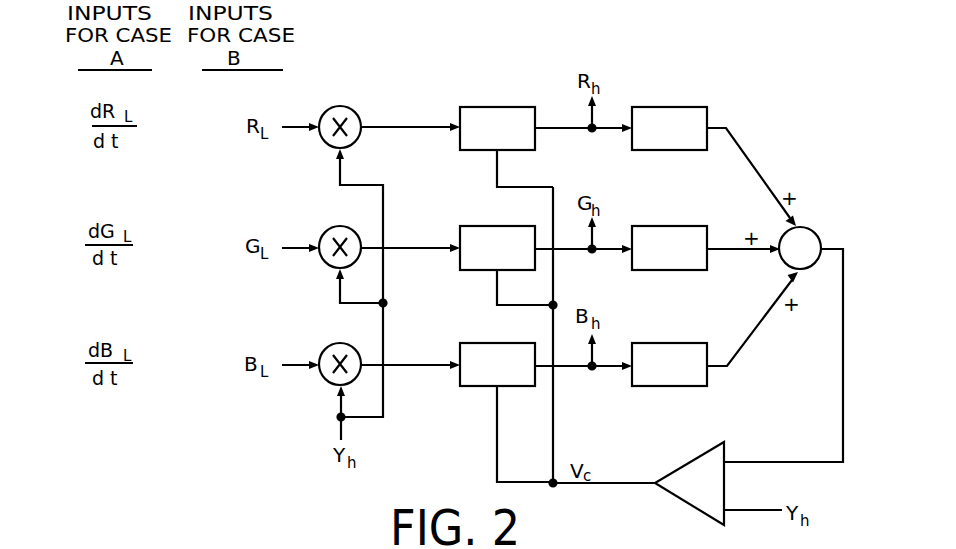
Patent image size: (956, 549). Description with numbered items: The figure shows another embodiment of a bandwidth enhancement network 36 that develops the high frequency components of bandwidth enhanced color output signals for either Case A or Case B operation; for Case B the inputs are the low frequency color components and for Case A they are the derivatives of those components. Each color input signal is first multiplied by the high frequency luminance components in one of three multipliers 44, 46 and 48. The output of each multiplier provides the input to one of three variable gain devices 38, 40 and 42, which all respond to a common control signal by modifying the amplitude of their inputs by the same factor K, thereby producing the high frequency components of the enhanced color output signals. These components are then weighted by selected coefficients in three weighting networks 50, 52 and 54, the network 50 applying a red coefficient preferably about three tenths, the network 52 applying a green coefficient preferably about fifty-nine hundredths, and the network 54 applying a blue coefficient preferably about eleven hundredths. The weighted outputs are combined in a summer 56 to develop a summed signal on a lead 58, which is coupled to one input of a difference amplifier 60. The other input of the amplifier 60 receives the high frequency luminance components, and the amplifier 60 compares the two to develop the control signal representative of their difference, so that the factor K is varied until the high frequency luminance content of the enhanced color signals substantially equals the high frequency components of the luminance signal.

The enhancement network 36 is at (762, 88).
The variable gain device 38 is at (472, 151).
The variable gain device 40 is at (478, 271).
The variable gain device 42 is at (478, 387).
The multiplier 44 is at (326, 143).
The multiplier 46 is at (325, 263).
The multiplier 48 is at (325, 380).
The weighting network 50 is at (678, 151).
The weighting network 52 is at (680, 271).
The weighting network 54 is at (680, 388).
The summer 56 is at (816, 233).
The lead 58 is at (843, 368).
The difference amplifier 60 is at (683, 497).